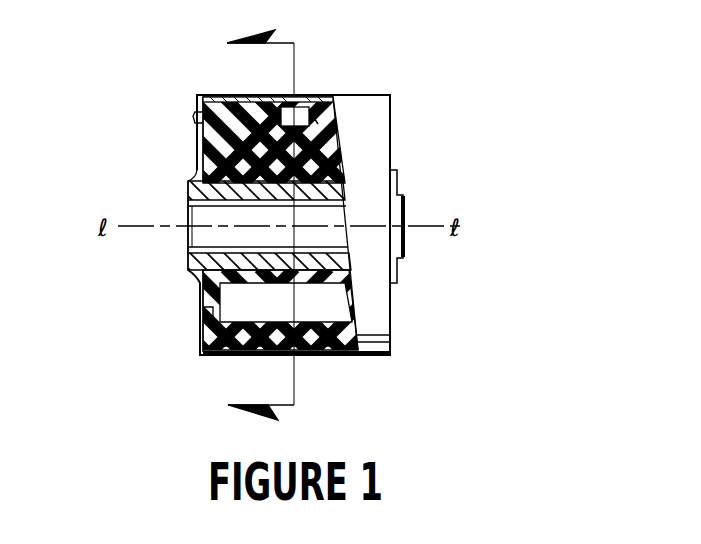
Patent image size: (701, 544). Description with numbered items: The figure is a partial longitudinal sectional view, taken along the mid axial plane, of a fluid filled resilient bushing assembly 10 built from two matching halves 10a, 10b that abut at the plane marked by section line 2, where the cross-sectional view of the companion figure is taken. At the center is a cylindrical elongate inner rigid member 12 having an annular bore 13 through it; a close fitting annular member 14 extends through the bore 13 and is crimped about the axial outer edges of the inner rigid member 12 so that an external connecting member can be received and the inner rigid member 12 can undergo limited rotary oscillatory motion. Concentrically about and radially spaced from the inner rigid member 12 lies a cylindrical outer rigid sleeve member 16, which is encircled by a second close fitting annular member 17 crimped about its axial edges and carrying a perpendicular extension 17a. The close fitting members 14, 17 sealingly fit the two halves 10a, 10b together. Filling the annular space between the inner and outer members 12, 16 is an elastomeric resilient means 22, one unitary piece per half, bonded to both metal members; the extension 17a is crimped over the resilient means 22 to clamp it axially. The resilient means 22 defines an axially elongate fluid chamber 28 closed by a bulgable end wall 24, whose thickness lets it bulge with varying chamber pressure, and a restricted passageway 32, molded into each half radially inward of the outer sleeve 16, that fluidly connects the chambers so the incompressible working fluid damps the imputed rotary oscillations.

The section line 2— 2 is at (260, 225).
The bushing assembly 10 is at (417, 85).
The matching half 10a is at (376, 356).
The matching half 10b is at (230, 357).
The inner rigid member 12 is at (190, 183).
The annular bore 13 is at (190, 244).
The close fitting annular member 14 is at (190, 211).
The outer rigid sleeve member 16 is at (218, 96).
The close fitting annular member 17 is at (240, 97).
The extension 17a is at (200, 116).
The resilient means 22 is at (308, 100).
The bulgable end wall 24 is at (200, 313).
The chamber 28 is at (313, 313).
The restricted passageway 32 is at (315, 121).